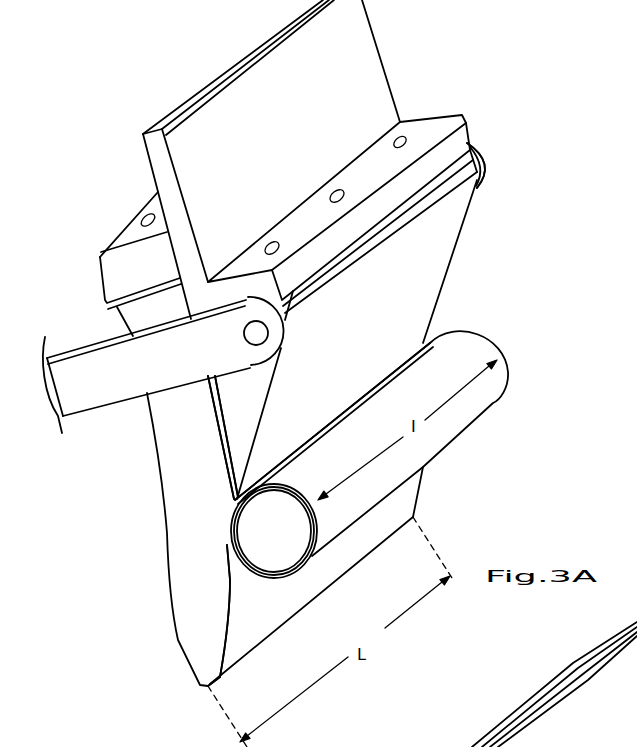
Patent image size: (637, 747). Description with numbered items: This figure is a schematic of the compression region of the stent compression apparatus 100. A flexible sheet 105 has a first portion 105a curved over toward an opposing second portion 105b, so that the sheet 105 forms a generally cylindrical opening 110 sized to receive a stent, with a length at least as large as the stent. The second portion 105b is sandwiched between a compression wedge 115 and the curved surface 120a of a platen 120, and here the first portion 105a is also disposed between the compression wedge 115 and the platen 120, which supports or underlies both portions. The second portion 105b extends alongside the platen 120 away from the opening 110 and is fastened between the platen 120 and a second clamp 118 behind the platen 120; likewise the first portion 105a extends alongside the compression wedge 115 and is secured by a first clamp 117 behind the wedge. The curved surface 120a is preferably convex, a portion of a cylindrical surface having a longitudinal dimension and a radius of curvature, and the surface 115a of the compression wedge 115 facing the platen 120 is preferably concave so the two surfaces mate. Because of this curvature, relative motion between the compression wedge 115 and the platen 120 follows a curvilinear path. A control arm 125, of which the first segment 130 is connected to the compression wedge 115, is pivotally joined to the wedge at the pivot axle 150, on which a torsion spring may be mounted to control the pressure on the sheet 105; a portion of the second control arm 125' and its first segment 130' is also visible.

The apparatus 100 is at (120, 92).
The flexible sheet 105 is at (283, 572).
The first portion 105a is at (300, 448).
The second portion 105b is at (222, 472).
The cylindrical opening 110 is at (283, 532).
The compression wedge 115 is at (267, 412).
The surface of the compression wedge 115a is at (222, 388).
The first clamp 117 is at (420, 131).
The second clamp 118 is at (118, 262).
The platen 120 is at (205, 628).
The curved surface 120a is at (230, 585).
The control arm 125 is at (143, 351).
The second control arm 125' is at (537, 157).
The first segment 130 is at (307, 331).
The first segment of the second control arm 130' is at (518, 157).
The pivot axle 150 is at (263, 333).